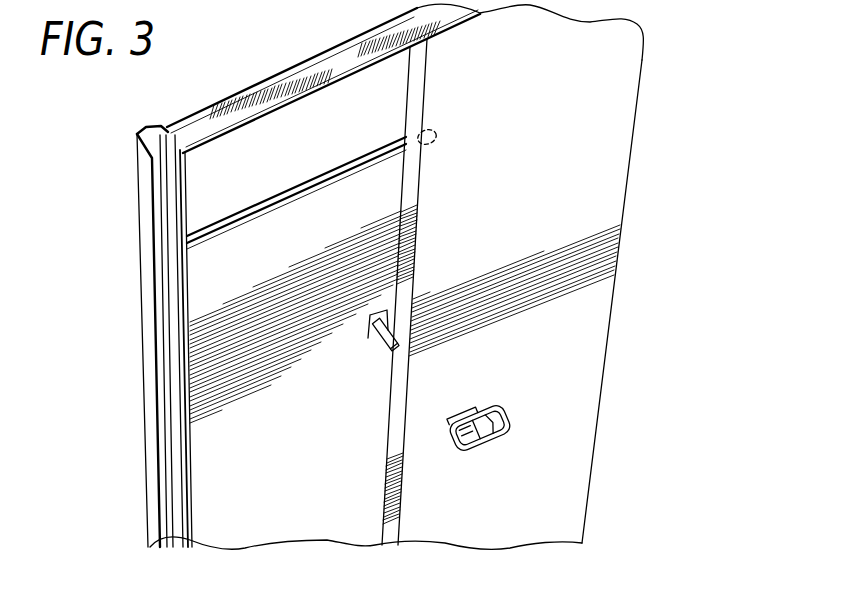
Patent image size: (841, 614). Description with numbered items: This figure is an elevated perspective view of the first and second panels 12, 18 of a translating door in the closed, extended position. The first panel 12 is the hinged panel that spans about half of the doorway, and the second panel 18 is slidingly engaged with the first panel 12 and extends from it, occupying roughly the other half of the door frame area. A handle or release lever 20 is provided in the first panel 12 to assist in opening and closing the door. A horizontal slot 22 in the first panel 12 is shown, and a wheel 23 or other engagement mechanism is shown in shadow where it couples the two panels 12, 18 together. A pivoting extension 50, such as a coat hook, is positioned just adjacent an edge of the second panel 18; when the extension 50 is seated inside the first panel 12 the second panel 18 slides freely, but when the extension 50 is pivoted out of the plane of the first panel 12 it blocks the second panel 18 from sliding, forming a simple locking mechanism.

The first panel 12 is at (598, 70).
The second panel 18 is at (237, 423).
The handle or release lever 20 is at (505, 414).
The horizontal groove or slot 22 is at (265, 196).
The wheel 23 is at (437, 133).
The pivoting extension 50 is at (378, 346).